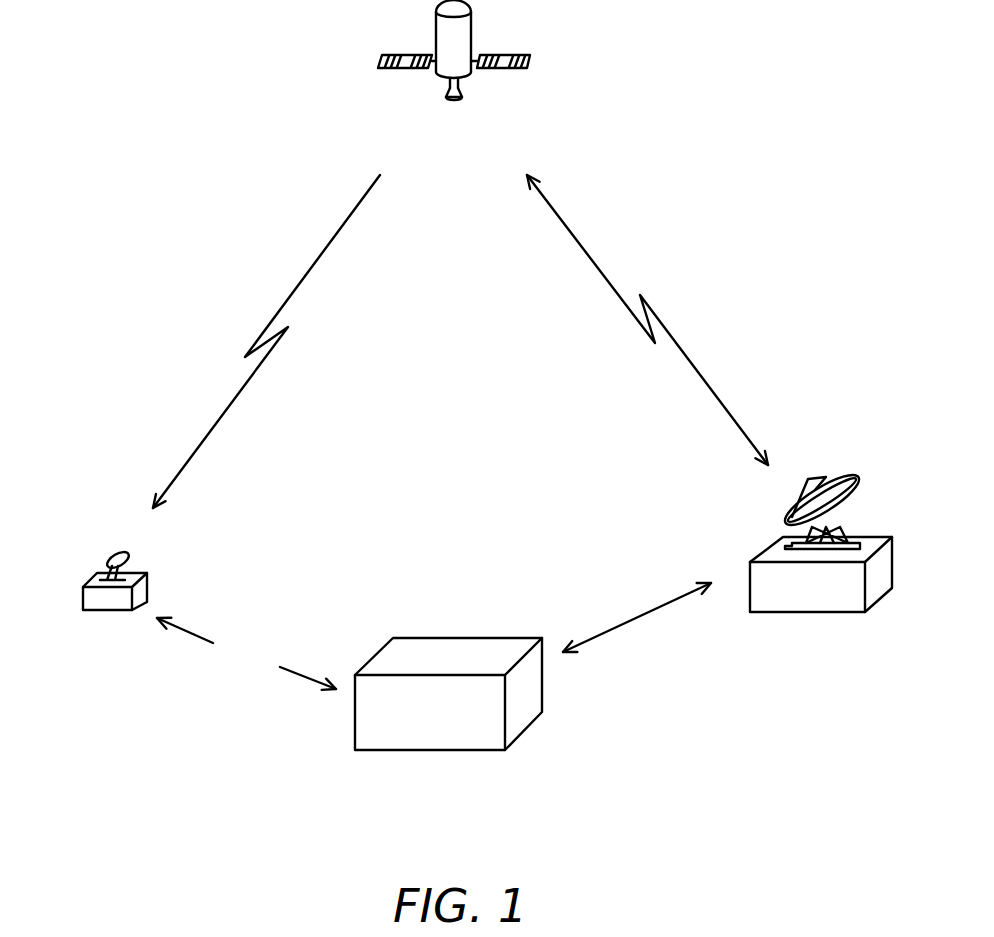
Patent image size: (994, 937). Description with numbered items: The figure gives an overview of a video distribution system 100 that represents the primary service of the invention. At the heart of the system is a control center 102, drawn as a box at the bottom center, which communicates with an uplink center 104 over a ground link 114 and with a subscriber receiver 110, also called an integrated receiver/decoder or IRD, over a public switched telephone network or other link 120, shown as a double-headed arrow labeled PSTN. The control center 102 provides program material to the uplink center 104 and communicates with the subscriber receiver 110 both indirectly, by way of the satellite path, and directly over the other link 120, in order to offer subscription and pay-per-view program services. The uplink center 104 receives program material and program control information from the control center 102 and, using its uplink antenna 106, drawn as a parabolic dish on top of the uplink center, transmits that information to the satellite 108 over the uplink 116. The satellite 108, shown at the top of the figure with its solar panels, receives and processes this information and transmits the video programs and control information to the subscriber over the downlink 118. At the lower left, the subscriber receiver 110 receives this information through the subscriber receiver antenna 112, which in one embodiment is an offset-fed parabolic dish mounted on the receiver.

The video distribution system 100 is at (828, 137).
The control center 102 is at (525, 730).
The uplink center 104 is at (805, 612).
The uplink antenna 106 is at (863, 483).
The satellite 108 is at (500, 70).
The subscriber receiver 110 is at (155, 580).
The subscriber receiver antenna 112 is at (115, 553).
The ground link 114 is at (632, 618).
The uplink 116 is at (690, 362).
The downlink 118 is at (315, 267).
The other link 120 is at (282, 627).